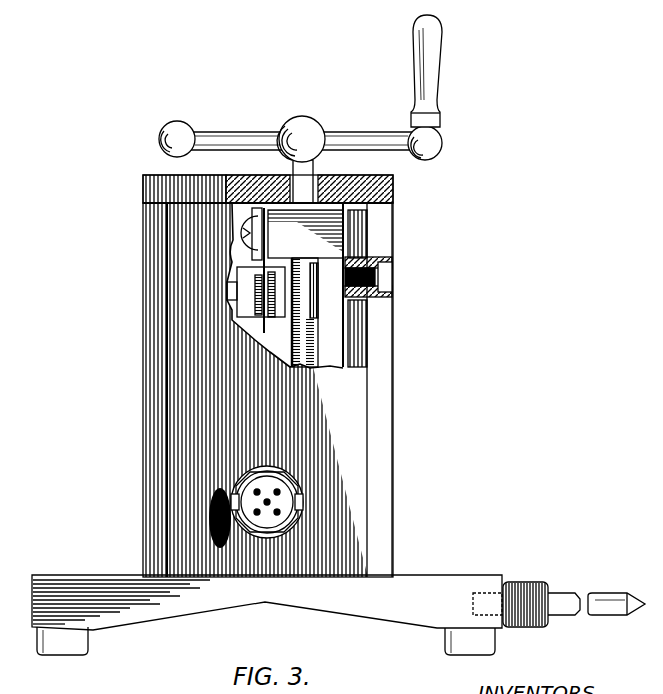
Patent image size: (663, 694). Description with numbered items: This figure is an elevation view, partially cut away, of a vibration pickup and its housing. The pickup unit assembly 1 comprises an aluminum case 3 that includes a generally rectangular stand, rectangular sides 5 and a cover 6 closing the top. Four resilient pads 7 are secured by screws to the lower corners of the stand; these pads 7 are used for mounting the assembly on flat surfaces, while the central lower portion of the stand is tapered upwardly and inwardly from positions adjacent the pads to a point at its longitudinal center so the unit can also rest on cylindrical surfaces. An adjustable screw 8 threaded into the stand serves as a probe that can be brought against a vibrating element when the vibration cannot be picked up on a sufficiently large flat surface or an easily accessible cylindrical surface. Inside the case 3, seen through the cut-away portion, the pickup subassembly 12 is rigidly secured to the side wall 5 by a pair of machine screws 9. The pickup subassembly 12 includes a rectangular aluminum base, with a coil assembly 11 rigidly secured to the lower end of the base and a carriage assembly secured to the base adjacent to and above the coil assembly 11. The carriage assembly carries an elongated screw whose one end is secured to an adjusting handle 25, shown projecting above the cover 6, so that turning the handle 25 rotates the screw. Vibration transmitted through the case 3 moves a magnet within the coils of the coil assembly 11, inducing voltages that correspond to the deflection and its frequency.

The pickup unit assembly 1 is at (267, 416).
The aluminum case 3 is at (393, 425).
The rectangular sides 5 is at (393, 470).
The cover 6 is at (393, 180).
The resilient pads 7 is at (495, 650).
The adjustable screw 8 is at (473, 593).
The machine screws 9 is at (393, 272).
The coil assembly 11 is at (303, 505).
The pickup subassembly 12 is at (333, 328).
The adjusting handle 25 is at (441, 30).